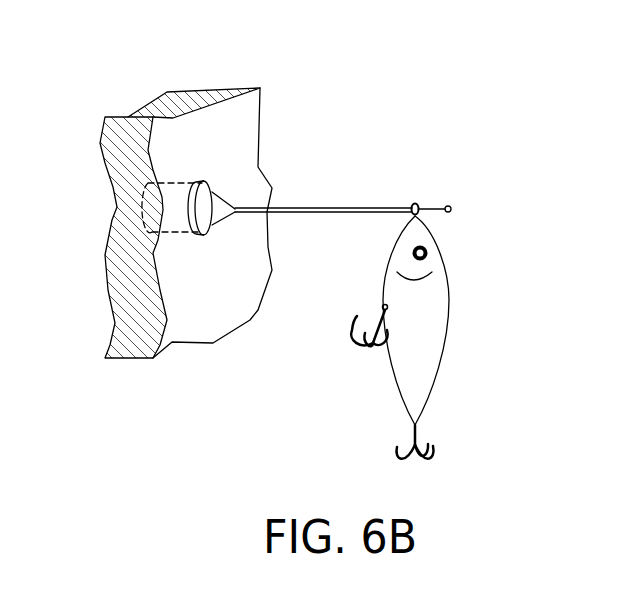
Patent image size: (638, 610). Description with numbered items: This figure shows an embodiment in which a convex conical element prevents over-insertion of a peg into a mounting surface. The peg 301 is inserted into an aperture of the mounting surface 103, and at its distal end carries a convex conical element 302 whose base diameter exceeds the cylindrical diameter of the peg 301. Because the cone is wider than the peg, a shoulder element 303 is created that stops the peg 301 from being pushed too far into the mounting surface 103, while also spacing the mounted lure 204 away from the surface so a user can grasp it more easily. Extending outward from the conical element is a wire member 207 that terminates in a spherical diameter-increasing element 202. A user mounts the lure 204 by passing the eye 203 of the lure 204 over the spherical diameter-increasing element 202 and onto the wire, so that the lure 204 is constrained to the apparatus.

The mounting surface 103 is at (236, 117).
The peg 301 is at (173, 235).
The convex conical element 302 is at (215, 200).
The shoulder element 303 is at (200, 183).
The shaft / wire 207 is at (348, 208).
The eye 203 is at (420, 212).
The spherical diameter-increasing element 202 is at (451, 207).
The lure 204 is at (472, 327).